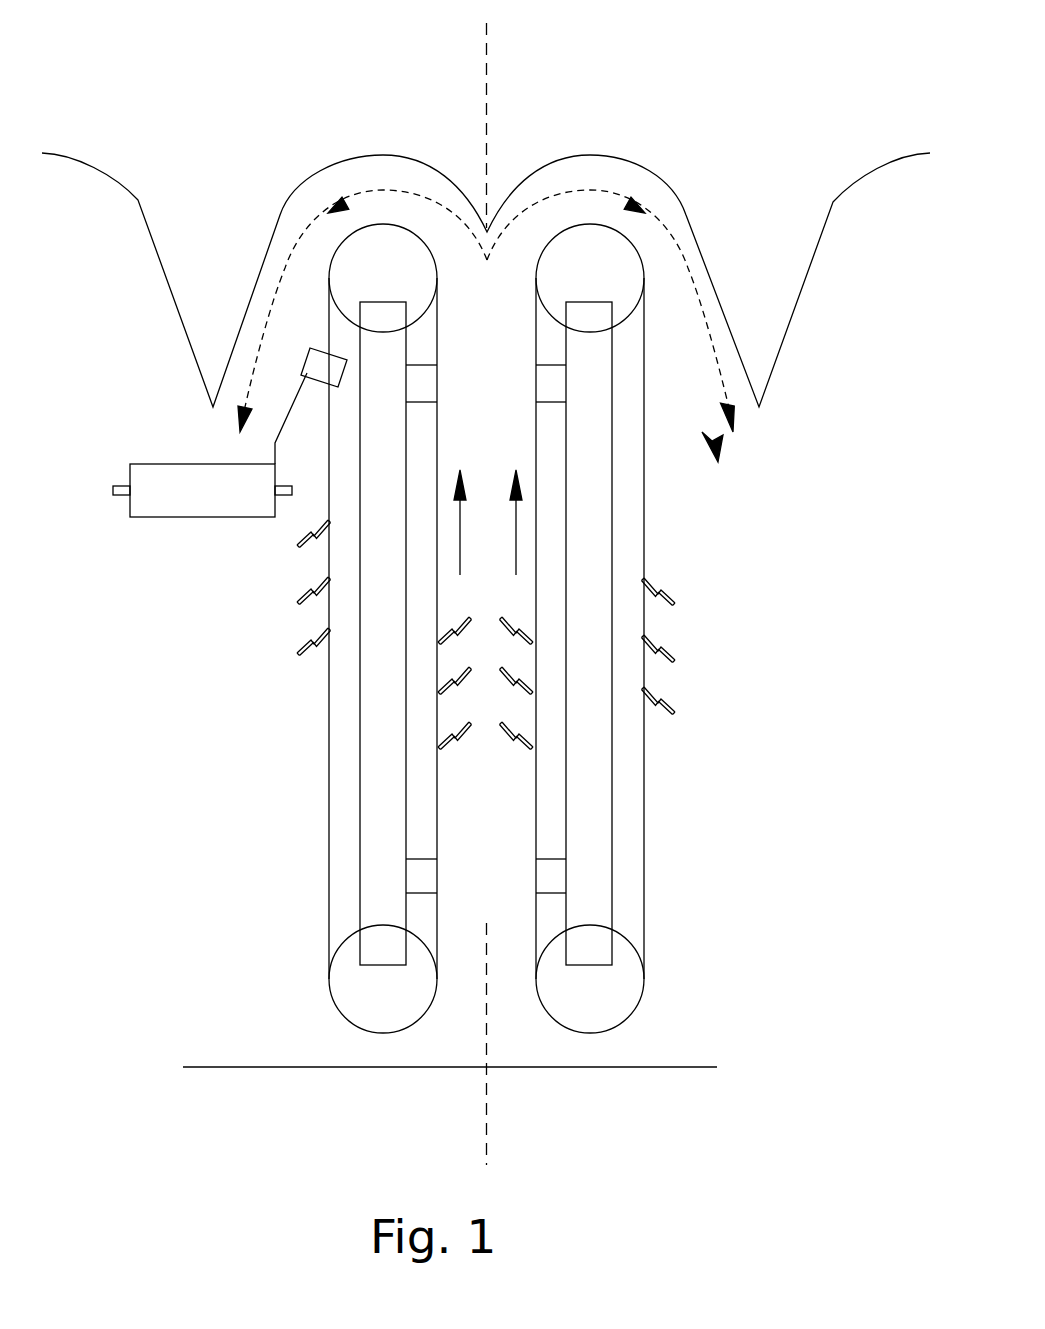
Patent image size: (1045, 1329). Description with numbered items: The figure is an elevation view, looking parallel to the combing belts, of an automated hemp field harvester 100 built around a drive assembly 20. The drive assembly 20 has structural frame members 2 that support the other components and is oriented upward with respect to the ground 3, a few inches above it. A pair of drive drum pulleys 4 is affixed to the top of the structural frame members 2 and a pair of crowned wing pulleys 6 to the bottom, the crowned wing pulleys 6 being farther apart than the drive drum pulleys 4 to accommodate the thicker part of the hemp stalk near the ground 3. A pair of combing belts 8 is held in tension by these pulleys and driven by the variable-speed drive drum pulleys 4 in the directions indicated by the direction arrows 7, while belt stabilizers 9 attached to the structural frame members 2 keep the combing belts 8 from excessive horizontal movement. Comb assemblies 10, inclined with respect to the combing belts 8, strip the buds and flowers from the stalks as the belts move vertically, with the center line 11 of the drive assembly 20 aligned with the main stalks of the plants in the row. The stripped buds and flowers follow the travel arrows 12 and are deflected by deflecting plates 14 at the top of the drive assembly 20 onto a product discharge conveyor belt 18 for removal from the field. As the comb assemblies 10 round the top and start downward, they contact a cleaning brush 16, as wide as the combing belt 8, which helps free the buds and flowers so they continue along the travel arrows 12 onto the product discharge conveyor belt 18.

The automated hemp field harvester 100 is at (268, 70).
The structural frame members 2 is at (358, 443).
The ground 3 is at (280, 1067).
The drive drum pulleys 4 is at (553, 270).
The crowned wing pulleys 6 is at (363, 997).
The direction arrows 7 is at (518, 530).
The combing belts 8 is at (329, 789).
The belt stabilizers 9 is at (536, 382).
The comb assemblies 10 is at (270, 600).
The center line 11 is at (487, 48).
The travel arrows 12 is at (486, 326).
The deflecting plates 14 is at (291, 200).
The cleaning brush 16 is at (310, 348).
The product discharge conveyor belts 18 is at (192, 517).
The drive assembly 20 is at (734, 702).